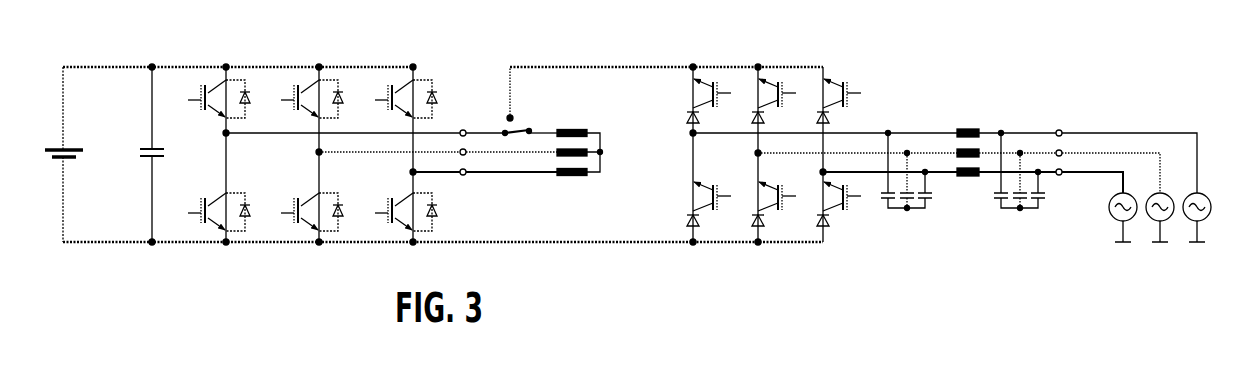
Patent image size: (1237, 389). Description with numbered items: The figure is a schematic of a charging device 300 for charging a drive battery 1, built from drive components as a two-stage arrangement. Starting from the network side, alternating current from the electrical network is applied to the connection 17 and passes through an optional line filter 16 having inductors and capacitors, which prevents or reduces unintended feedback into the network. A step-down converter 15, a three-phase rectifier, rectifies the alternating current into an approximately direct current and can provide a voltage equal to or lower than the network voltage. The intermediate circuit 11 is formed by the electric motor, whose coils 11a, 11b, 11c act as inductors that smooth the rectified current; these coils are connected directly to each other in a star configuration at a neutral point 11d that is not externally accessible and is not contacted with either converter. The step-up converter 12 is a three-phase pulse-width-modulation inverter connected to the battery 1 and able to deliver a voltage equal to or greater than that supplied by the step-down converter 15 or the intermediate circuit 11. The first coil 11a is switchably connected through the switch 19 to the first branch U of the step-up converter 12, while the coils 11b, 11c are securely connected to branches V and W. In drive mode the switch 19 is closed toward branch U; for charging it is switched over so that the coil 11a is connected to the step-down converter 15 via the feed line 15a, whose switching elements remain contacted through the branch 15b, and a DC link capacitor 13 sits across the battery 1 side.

The battery 1 is at (82, 158).
The DC link capacitor 13 is at (137, 152).
The step-up converter 12 is at (324, 57).
The switch 19 is at (500, 113).
The intermediate circuit 11 is at (603, 118).
The first coil 11a is at (572, 126).
The second coil 11b is at (585, 146).
The third coil 11c is at (576, 178).
The neutral point 11d is at (602, 157).
The step-down converter 15 is at (767, 56).
The feed line 15a is at (624, 66).
The branch 15b is at (623, 245).
The line filter 16 is at (971, 118).
The connection 17 is at (1061, 120).
The charging device 300 is at (800, 250).